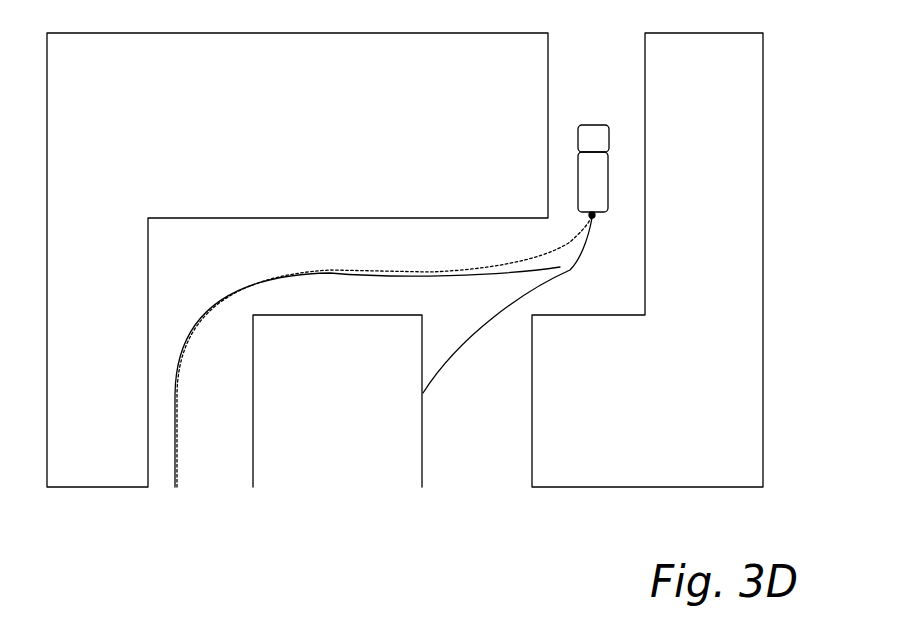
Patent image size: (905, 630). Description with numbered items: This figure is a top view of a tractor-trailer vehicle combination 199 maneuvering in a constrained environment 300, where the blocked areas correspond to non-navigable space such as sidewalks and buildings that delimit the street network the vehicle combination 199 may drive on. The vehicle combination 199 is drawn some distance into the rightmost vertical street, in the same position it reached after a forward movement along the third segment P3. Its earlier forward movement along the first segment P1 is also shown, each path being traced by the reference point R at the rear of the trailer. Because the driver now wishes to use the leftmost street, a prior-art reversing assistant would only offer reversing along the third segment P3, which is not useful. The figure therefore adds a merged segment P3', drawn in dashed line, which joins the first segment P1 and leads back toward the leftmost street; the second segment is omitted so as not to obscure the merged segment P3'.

The constrained environment 300 is at (488, 467).
The first segment P1 is at (225, 297).
The merged segment P3' is at (384, 290).
The third segment P3 is at (574, 305).
The tractor-trailer vehicle combination 199 is at (597, 120).
The reference point R is at (595, 217).